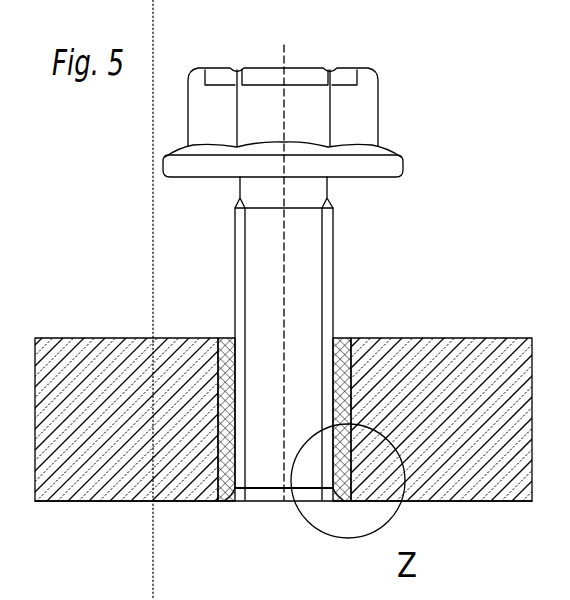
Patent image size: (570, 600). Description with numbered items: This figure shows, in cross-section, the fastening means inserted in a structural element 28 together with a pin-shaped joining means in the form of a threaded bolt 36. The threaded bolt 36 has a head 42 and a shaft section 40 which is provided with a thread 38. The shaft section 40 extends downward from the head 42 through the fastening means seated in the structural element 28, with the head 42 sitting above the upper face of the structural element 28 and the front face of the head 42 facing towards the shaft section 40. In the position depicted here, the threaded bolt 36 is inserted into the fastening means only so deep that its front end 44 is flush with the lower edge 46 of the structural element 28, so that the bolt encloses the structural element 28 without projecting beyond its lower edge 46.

The structural element 28 is at (452, 352).
The threaded bolt 36 is at (183, 262).
The thread 38 is at (325, 242).
The shaft section 40 is at (298, 290).
The head 42 is at (350, 113).
The front end 44 is at (262, 500).
The lower edge 46 is at (105, 500).